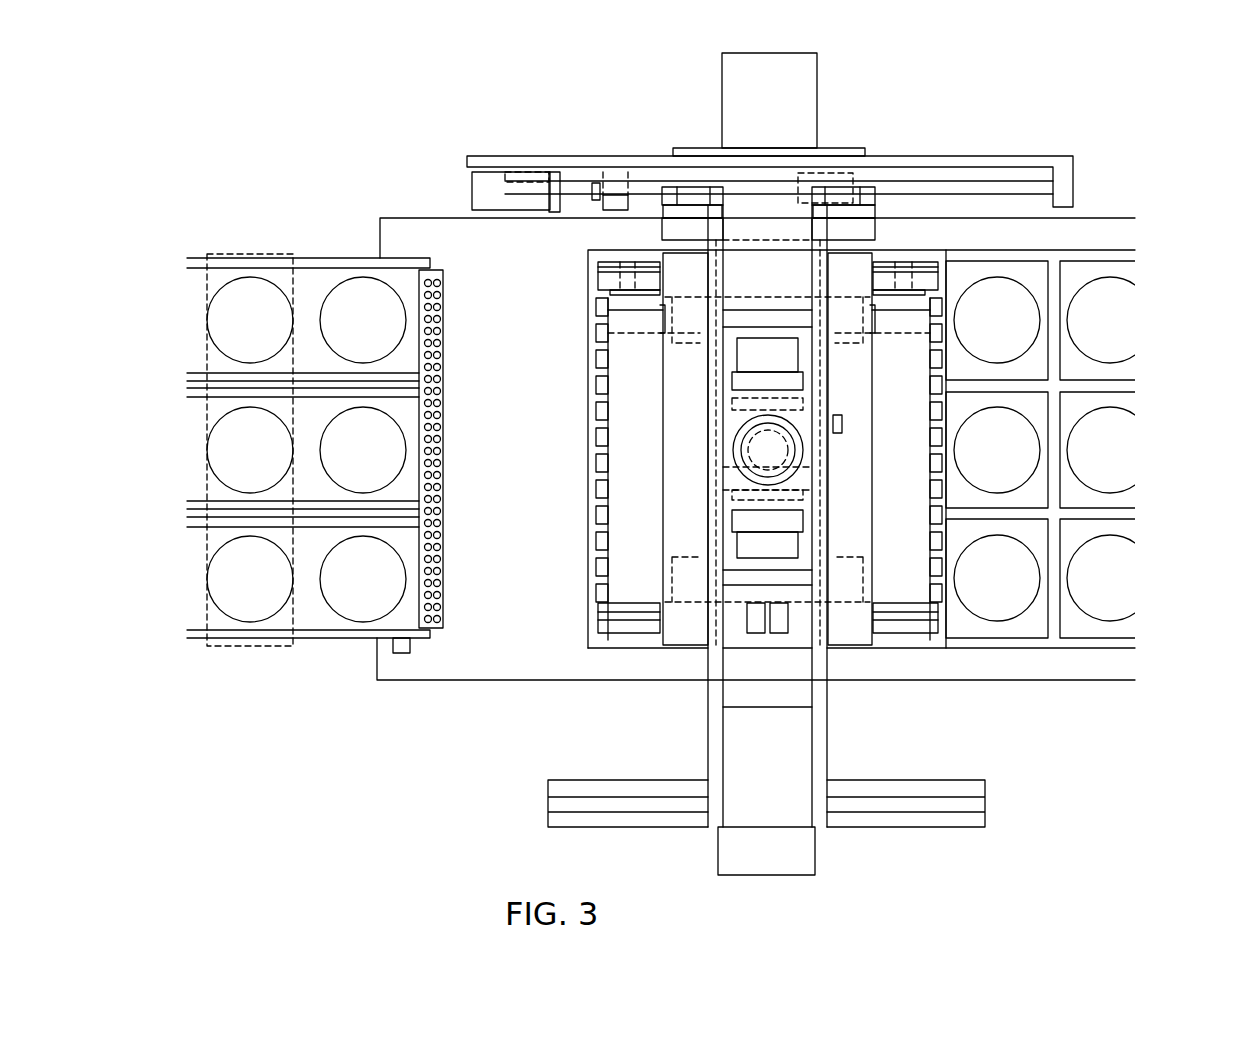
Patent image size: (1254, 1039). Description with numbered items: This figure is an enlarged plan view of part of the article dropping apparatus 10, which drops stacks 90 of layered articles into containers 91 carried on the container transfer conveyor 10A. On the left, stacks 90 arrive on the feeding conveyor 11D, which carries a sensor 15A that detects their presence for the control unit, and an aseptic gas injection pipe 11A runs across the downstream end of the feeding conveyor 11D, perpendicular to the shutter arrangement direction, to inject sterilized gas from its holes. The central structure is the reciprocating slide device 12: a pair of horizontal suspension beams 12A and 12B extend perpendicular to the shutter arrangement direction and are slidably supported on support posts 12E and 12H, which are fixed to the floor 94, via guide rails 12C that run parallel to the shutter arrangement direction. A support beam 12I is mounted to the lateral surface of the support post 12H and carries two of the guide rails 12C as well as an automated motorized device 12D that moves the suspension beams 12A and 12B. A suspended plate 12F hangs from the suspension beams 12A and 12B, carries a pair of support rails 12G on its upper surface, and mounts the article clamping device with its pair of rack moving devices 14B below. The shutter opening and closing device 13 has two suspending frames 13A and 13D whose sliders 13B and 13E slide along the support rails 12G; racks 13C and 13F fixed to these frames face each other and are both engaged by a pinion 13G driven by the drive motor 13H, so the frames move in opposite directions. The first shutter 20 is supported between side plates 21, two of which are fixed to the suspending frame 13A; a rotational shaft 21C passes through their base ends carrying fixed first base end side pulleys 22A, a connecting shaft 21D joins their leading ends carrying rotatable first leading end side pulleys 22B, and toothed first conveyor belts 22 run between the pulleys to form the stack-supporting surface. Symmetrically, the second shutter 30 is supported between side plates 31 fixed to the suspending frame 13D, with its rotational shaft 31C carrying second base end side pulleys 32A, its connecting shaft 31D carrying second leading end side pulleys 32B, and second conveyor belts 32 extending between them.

The article dropping apparatus 10 is at (633, 78).
The container transfer conveyor 10A is at (1035, 681).
The aseptic gas injection pipe 11A is at (438, 272).
The feeding conveyor 11D is at (312, 275).
The reciprocating slide device 12 is at (841, 195).
The suspension beam 12A is at (708, 755).
The suspension beam 12B is at (828, 760).
The guide rail 12C is at (992, 187).
The automated motorized device 12D is at (490, 200).
The support post 12E is at (738, 858).
The suspended plate 12F is at (623, 362).
The support rail 12G is at (936, 306).
The support post 12H is at (808, 76).
The support beam 12I is at (527, 171).
The shutter opening and closing device 13 is at (843, 418).
The suspending frame 13A is at (678, 460).
The slider 13B is at (660, 333).
The rack 13C is at (690, 417).
The suspending frame 13D is at (848, 505).
The slider 13E is at (845, 345).
The rack 13F is at (848, 473).
The pinion 13G is at (832, 455).
The drive motor 13H is at (733, 450).
The rack moving device 14B is at (762, 350).
The sensor 15A is at (401, 654).
The first shutter 20 is at (649, 429).
The side plate 21 is at (610, 262).
The rotational shaft 21C is at (623, 633).
The connecting shaft 21D is at (752, 633).
The first conveyor belt 22 is at (600, 303).
The first base end side pulley 22A is at (580, 633).
The first leading end side pulley 22B is at (712, 615).
The second shutter 30 is at (893, 442).
The side plate 31 is at (927, 253).
The rotational shaft 31C is at (910, 633).
The connecting shaft 31D is at (780, 633).
The second conveyor belt 32 is at (940, 588).
The second base end side pulley 32A is at (948, 632).
The second leading end side pulley 32B is at (823, 615).
The stack 90 is at (230, 318).
The container 91 is at (1072, 533).
The floor 94 is at (352, 784).